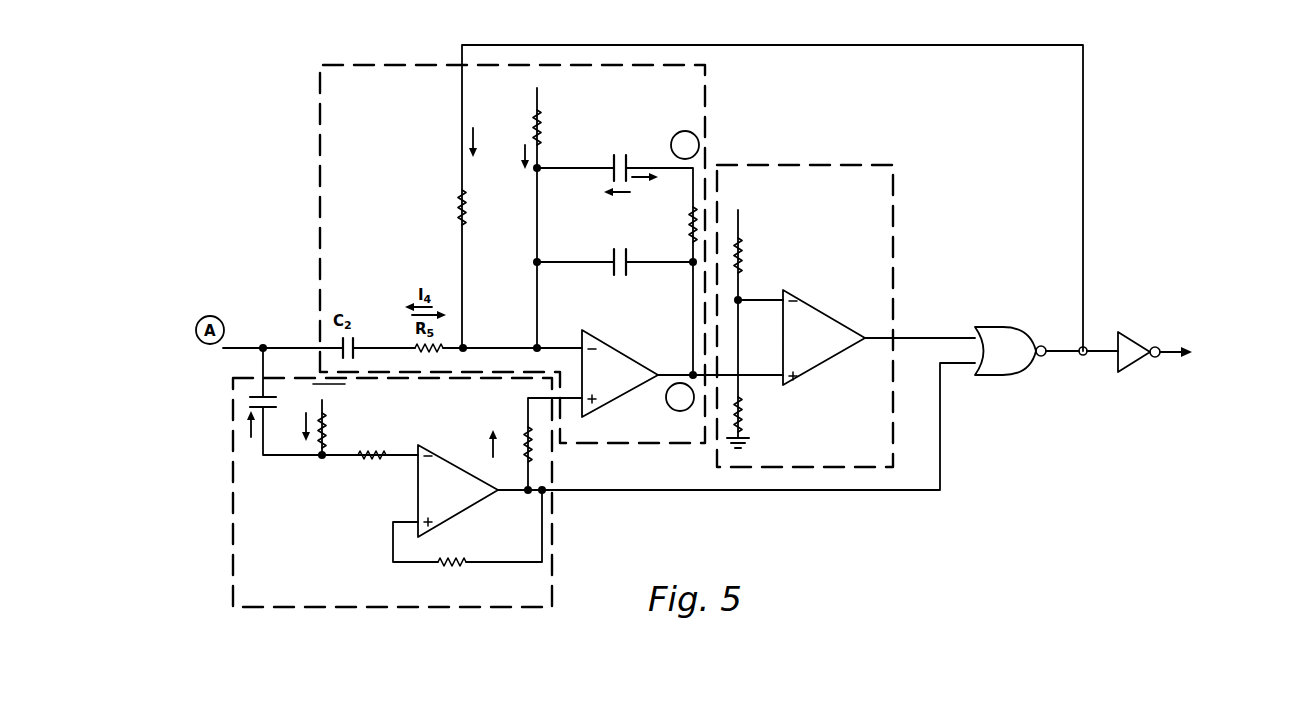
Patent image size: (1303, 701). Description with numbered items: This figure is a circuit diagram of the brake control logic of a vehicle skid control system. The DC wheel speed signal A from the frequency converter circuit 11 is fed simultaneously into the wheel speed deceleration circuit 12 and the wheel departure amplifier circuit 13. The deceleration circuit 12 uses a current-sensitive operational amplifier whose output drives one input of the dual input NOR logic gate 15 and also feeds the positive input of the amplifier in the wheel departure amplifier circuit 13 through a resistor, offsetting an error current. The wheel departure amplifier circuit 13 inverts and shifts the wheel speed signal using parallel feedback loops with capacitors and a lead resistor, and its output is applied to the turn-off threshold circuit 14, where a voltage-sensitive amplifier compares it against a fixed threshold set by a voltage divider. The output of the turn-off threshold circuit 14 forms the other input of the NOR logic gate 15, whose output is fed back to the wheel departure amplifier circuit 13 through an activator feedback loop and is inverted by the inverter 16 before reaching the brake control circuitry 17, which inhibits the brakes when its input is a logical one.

The frequency converter circuit 11 is at (114, 364).
The wheel speed deceleration circuit 12 is at (232, 556).
The wheel departure amplifier circuit 13 is at (392, 58).
The turn-off threshold circuit 14 is at (798, 164).
The NOR logic gate 15 is at (997, 329).
The inverter 16 is at (1130, 333).
The brake control circuitry 17 is at (1219, 341).